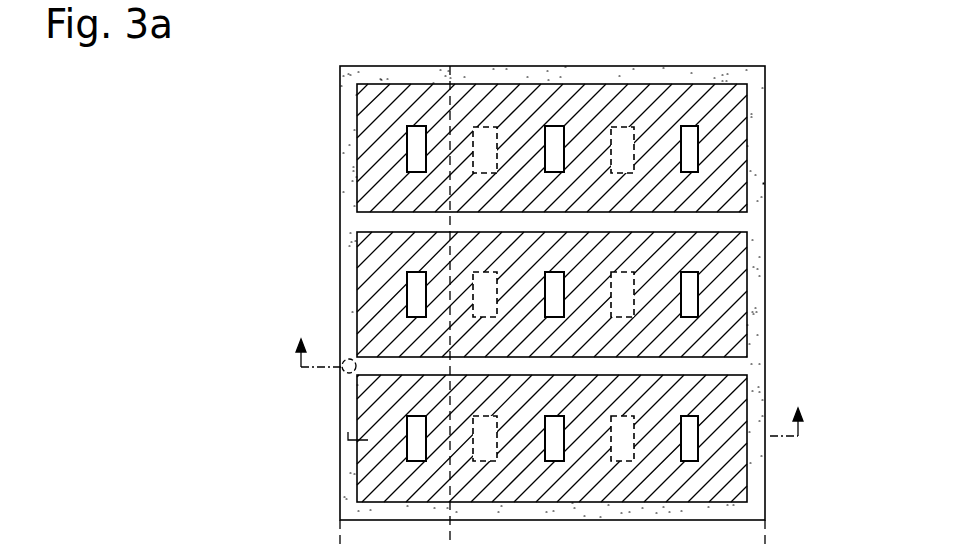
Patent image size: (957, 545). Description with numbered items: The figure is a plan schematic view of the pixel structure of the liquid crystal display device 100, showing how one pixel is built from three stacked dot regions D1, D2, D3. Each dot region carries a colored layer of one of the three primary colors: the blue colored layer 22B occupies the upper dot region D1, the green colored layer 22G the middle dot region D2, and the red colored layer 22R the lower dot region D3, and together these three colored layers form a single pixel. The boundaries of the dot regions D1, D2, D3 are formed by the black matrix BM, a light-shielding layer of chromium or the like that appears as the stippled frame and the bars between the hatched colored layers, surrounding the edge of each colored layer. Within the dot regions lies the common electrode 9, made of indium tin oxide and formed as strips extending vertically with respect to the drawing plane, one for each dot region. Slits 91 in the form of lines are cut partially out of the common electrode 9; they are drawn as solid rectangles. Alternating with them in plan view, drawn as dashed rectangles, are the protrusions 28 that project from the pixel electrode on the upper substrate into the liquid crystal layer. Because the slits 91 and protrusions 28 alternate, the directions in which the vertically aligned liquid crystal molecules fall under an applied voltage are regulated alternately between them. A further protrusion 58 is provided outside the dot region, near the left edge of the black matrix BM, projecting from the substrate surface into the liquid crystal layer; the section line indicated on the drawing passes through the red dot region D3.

The liquid crystal display device 100 is at (789, 84).
The common electrode 9 is at (734, 117).
The black matrix BM is at (341, 187).
The dot region D1 is at (367, 118).
The dot region D2 is at (375, 277).
The dot region D3 is at (372, 473).
The blue colored layer 22B is at (723, 186).
The green colored layer 22G is at (728, 332).
The red colored layer 22R is at (742, 475).
The slits 91 is at (426, 140).
The protrusions 28 is at (488, 126).
The protrusion 58 is at (340, 358).